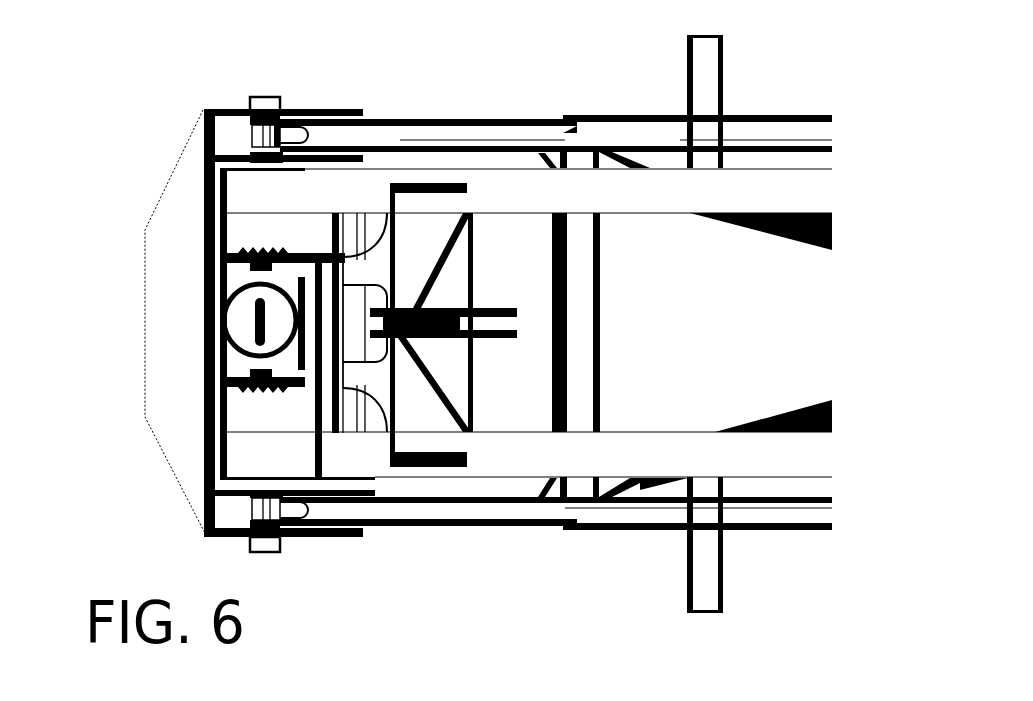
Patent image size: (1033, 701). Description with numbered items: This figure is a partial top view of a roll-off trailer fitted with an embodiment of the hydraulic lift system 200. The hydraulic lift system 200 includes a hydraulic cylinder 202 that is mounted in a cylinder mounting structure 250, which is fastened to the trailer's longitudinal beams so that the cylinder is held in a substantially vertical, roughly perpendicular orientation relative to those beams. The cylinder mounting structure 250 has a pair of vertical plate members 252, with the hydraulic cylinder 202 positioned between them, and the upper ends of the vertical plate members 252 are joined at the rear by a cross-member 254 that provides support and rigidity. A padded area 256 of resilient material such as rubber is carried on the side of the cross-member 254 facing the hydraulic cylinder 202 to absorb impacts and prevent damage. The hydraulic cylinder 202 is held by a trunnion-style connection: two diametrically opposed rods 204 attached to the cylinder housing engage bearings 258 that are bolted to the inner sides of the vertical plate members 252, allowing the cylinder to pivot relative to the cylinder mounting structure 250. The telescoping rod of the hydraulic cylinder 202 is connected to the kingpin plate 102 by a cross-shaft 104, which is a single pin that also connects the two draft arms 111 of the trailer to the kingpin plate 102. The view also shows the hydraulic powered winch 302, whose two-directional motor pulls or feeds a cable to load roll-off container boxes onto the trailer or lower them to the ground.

The kingpin plate 102 is at (182, 197).
The cross-shaft 104 is at (258, 95).
The draft arms 111 is at (438, 132).
The hydraulic lift system 200 is at (168, 231).
The hydraulic cylinder 202 is at (237, 332).
The rods 204 is at (253, 278).
The cylinder mounting structure 250 is at (380, 382).
The vertical plate members 252 is at (260, 392).
The cross-member 254 is at (325, 282).
The padded area 256 is at (307, 380).
The bearings 258 is at (253, 267).
The winch 302 is at (440, 296).